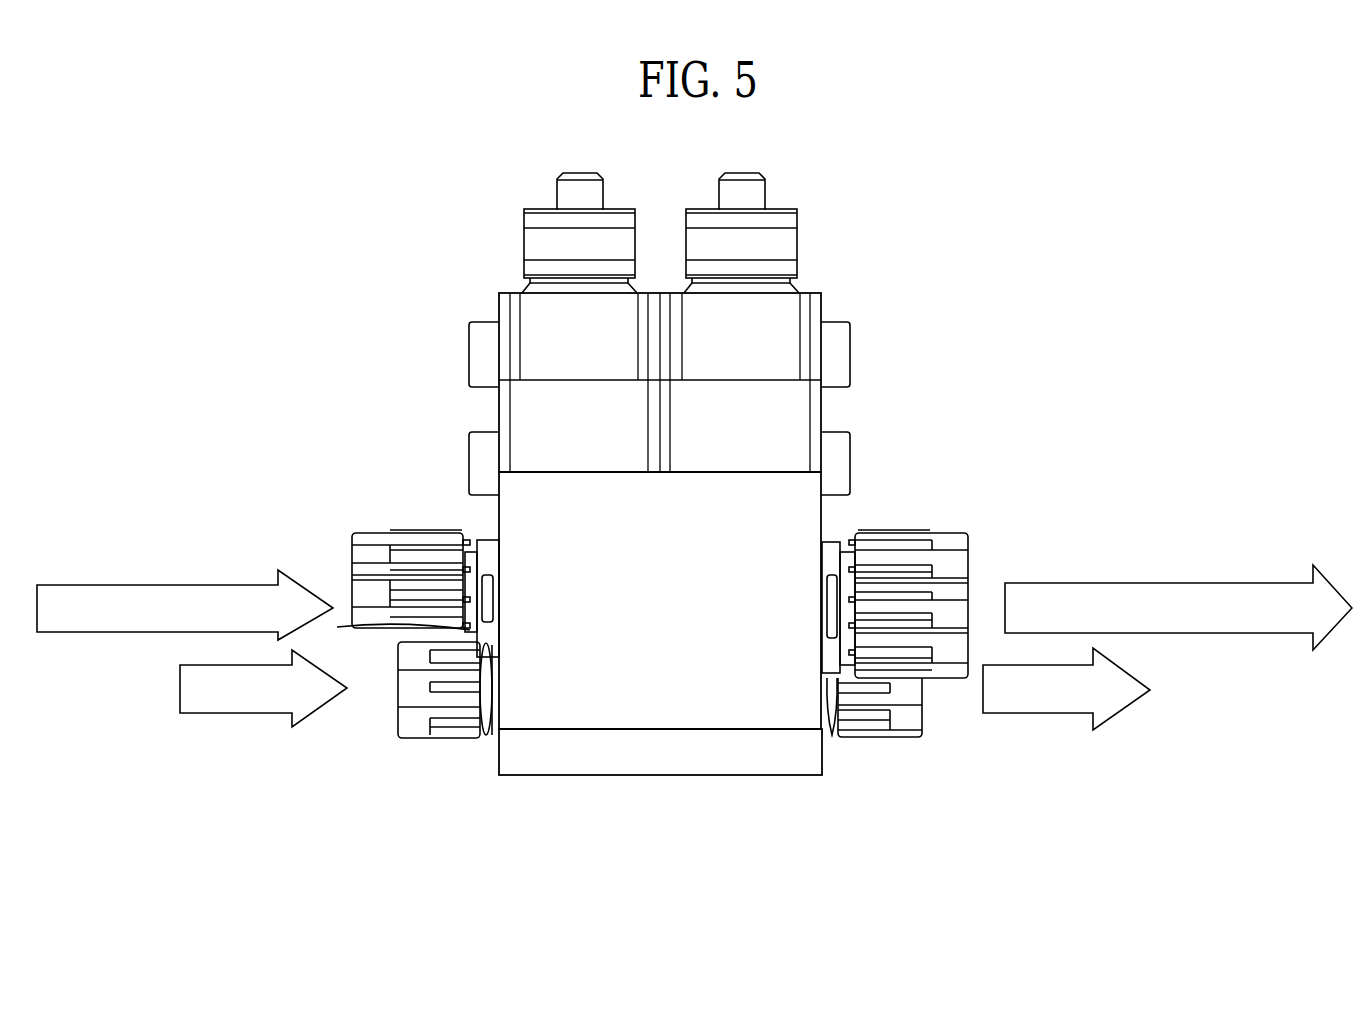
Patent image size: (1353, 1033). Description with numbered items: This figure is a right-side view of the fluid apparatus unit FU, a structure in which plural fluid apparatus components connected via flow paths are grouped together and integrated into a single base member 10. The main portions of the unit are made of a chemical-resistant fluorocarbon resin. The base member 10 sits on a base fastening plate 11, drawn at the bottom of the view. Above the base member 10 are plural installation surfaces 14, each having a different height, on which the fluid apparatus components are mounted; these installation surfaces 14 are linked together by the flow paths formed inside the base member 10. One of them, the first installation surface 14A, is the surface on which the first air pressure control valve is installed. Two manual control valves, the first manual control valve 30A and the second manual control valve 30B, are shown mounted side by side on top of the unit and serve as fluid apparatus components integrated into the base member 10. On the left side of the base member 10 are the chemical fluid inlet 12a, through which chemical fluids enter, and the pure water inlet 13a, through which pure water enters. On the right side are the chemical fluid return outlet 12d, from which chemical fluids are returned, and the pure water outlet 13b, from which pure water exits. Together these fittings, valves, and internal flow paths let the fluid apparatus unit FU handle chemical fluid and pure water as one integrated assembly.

The fluid apparatus unit FU is at (880, 178).
The base member 10 is at (797, 515).
The base fastening plate 11 is at (655, 767).
The installation surfaces 14 is at (626, 394).
The first installation surface 14A is at (552, 378).
The first manual control valve 30A is at (498, 292).
The second manual control valve 30B is at (821, 292).
The chemical fluid inlet 12a is at (347, 557).
The chemical fluid return outlet 12d is at (968, 557).
The pure water inlet 13a is at (398, 720).
The pure water outlet 13b is at (922, 718).